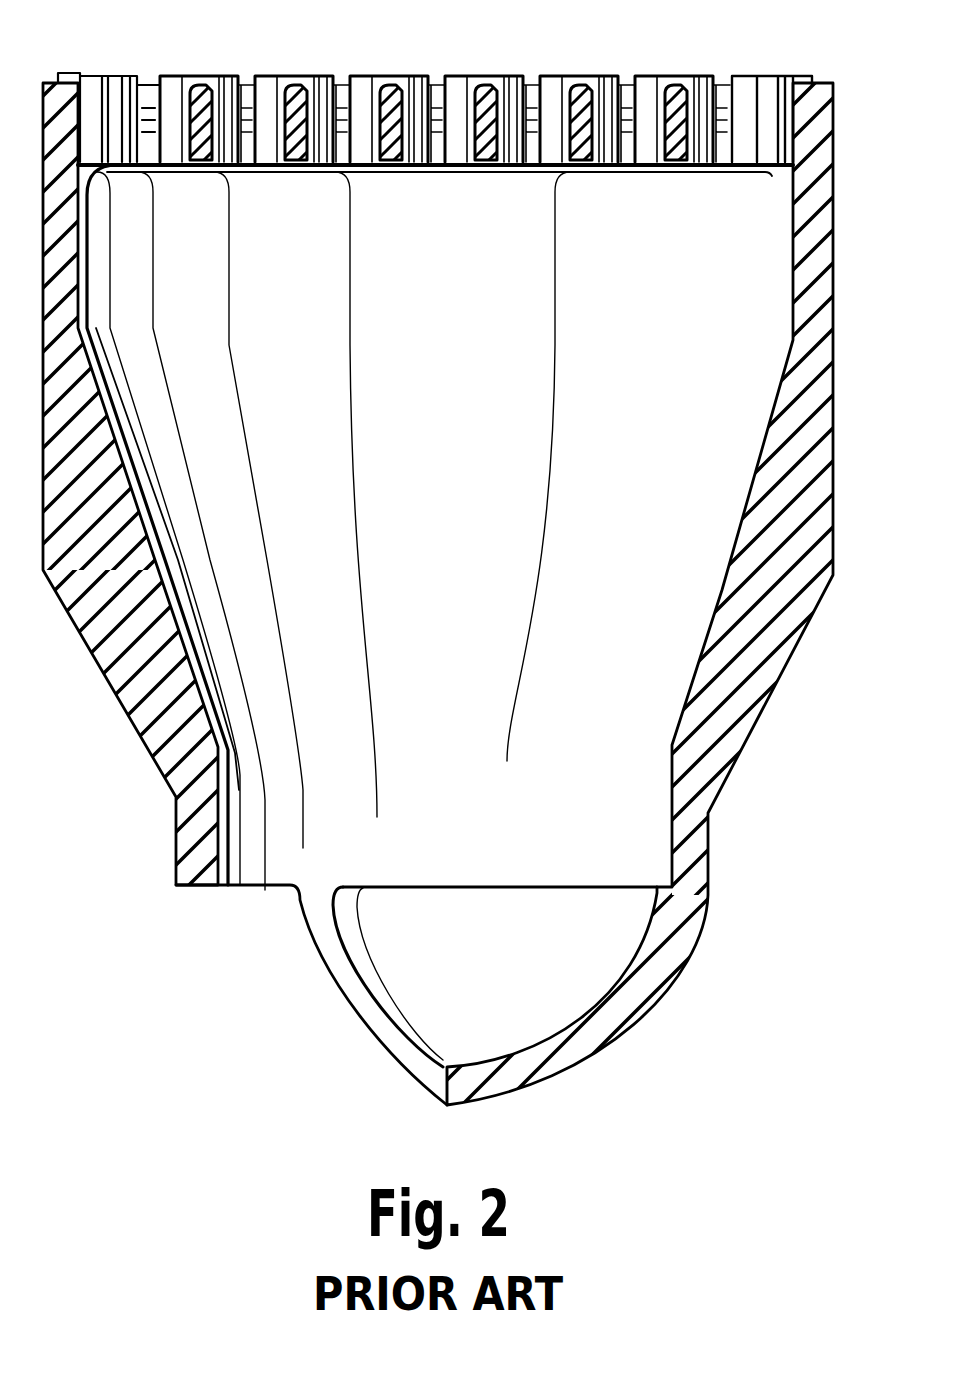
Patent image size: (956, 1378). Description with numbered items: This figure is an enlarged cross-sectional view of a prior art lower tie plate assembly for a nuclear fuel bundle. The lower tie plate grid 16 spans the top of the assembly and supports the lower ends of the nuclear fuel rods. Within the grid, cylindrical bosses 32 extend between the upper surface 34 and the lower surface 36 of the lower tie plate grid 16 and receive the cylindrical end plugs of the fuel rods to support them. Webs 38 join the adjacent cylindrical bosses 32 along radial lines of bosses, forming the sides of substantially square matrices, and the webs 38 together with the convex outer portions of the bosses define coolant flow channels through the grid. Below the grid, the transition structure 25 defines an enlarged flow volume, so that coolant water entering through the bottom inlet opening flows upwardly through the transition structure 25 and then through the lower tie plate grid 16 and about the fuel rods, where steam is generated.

The lower tie plate grid 16 is at (58, 97).
The transition structure 25 is at (710, 753).
The cylindrical bosses 32 is at (553, 100).
The upper surface 34 is at (470, 77).
The lower surface 36 is at (412, 165).
The webs 38 is at (287, 107).